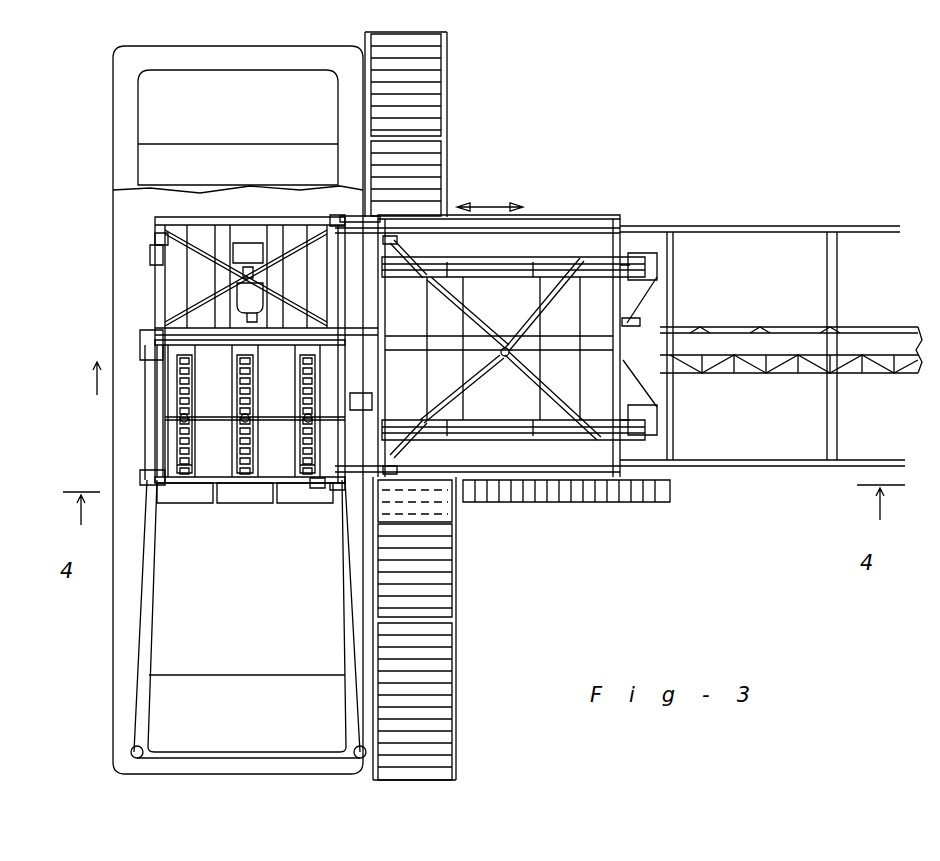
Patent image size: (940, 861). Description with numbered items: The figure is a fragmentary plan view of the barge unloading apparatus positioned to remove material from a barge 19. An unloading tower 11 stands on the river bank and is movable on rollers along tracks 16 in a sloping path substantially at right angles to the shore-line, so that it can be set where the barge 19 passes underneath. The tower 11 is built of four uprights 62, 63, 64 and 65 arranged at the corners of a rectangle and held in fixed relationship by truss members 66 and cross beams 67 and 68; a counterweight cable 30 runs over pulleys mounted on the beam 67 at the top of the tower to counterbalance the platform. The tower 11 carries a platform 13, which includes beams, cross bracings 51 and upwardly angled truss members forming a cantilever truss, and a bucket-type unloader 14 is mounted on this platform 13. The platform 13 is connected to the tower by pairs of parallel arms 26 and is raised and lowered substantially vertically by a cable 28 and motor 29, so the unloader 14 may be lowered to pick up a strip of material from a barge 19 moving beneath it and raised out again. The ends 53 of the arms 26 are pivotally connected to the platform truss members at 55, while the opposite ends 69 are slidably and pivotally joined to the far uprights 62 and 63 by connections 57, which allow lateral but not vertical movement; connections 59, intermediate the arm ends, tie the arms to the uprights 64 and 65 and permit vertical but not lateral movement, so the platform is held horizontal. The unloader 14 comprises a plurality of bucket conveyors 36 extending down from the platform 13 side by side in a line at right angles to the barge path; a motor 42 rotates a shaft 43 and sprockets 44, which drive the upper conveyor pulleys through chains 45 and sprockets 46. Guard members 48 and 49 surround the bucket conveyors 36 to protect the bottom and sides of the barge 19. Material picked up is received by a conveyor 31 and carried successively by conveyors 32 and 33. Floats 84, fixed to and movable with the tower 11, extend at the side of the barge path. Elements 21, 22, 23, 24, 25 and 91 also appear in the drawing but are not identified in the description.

The unloading tower 11 is at (633, 247).
The platform 13 is at (160, 318).
The bucket-type unloader 14 is at (170, 425).
The tracks 16 is at (815, 228).
The barge 19 is at (118, 255).
The collecting pan 21 is at (152, 568).
The mounting block 22 is at (157, 258).
The rollers 23 is at (145, 748).
The bracket 24 is at (162, 247).
The drive motor 25 is at (263, 305).
The arms 26 is at (528, 222).
The cable 28 is at (605, 347).
The motor 29 is at (648, 322).
The cable 30 is at (490, 270).
The conveyor 31 is at (292, 368).
The conveyor 32 is at (412, 355).
The conveyor 33 is at (760, 357).
The bucket conveyors 36 is at (208, 466).
The motor 42 is at (375, 398).
The shaft 43 is at (255, 414).
The sprockets 44 is at (210, 420).
The chains 45 is at (196, 398).
The sprockets 46 is at (195, 372).
The guard members 48 is at (168, 480).
The guard members 49 is at (283, 500).
The cross bracings 51 is at (180, 297).
The ends of arms 53 is at (343, 222).
The pivotal connection 55 is at (335, 218).
The connection 57 is at (615, 222).
The connection 59 is at (395, 248).
The upright 62 is at (648, 462).
The upright 63 is at (575, 226).
The upright 64 is at (392, 462).
The upright 65 is at (392, 242).
The truss members 66 is at (495, 362).
The cross beam 67 is at (593, 278).
The cross beam 68 is at (387, 325).
The ends of arms 69 is at (605, 228).
The floats 84 is at (455, 567).
The beam 91 is at (748, 325).